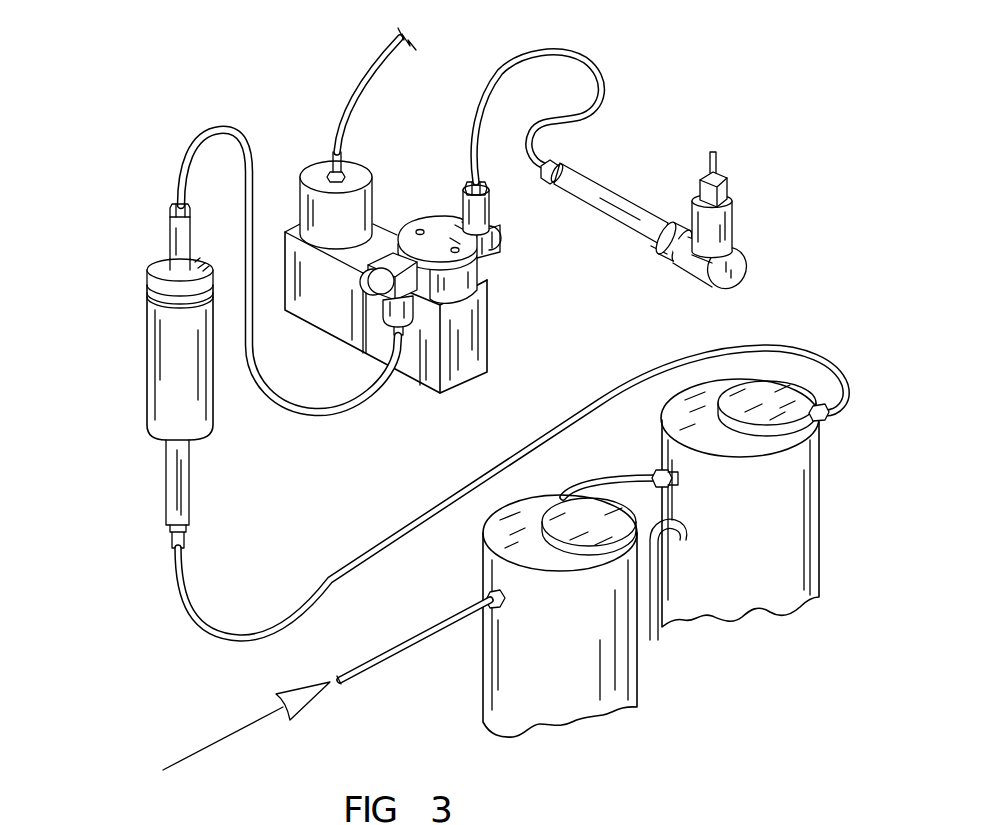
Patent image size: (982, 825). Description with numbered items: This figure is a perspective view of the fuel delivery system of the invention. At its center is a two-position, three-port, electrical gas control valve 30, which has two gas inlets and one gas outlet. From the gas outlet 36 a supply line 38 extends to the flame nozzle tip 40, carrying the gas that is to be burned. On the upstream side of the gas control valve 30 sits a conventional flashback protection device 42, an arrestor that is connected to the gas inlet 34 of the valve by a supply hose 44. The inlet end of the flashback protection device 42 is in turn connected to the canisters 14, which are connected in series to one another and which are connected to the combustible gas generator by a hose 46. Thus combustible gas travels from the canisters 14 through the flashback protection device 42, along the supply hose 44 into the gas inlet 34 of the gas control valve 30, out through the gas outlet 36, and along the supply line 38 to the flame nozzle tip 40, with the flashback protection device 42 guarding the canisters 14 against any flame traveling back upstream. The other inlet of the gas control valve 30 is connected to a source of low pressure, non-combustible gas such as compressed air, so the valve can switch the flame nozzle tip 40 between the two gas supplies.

The canisters 14 is at (645, 683).
The gas control valve 30 is at (502, 312).
The gas inlet 34 is at (362, 293).
The gas outlet 36 is at (500, 237).
The supply line 38 is at (608, 78).
The flame nozzle tip 40 is at (718, 154).
The flashback protection device 42 is at (173, 352).
The supply hose 44 is at (258, 130).
The hose 46 is at (310, 606).